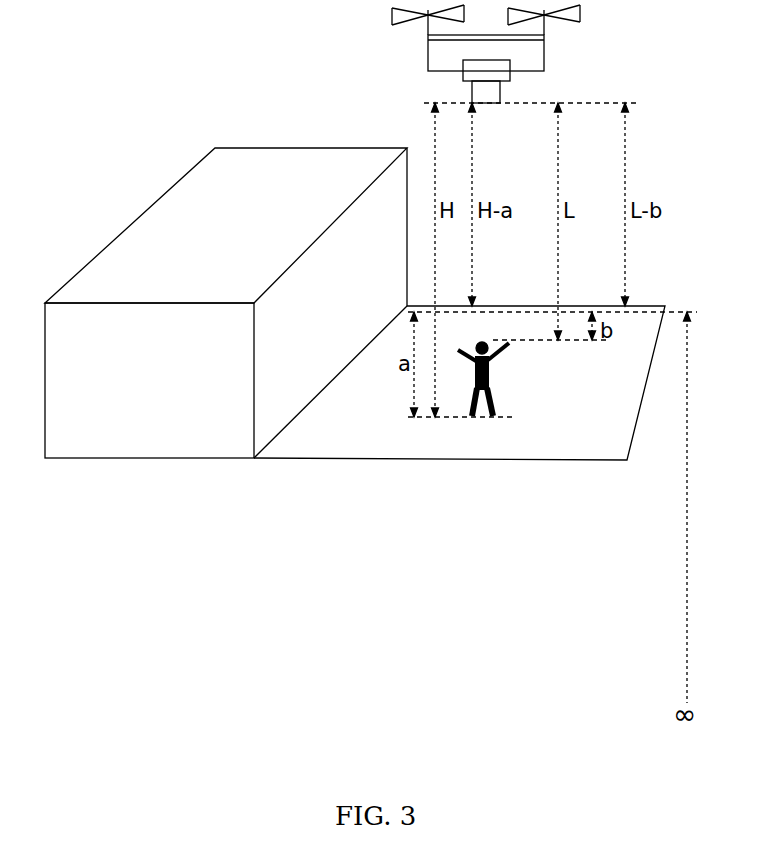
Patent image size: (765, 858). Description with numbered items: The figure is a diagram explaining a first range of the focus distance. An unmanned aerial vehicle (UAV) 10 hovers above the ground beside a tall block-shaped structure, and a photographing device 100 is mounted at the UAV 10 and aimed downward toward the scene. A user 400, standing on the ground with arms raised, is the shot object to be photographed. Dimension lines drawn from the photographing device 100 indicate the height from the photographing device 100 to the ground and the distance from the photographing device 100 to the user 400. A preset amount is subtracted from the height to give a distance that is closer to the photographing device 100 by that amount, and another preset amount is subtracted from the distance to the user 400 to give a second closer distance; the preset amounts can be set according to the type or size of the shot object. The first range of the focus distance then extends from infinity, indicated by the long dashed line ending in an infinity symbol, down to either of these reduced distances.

The unmanned aerial vehicle (UAV) 10 is at (544, 56).
The photographing device 100 is at (510, 76).
The user 400 is at (497, 402).